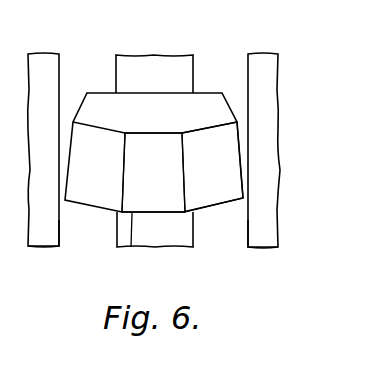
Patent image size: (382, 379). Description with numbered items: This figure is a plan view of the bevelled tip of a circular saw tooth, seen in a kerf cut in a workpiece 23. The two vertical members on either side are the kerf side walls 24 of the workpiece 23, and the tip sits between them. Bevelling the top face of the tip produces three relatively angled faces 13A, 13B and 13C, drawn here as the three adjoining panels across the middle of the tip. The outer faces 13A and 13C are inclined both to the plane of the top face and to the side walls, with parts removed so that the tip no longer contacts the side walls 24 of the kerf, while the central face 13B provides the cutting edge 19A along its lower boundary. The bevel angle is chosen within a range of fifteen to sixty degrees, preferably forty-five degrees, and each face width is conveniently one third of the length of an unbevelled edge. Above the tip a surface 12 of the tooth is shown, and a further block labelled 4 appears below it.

The lower block 4 is at (162, 237).
The surface 12 is at (161, 85).
The relatively angled face 13A is at (212, 167).
The central face 13B is at (154, 172).
The relatively angled face 13C is at (154, 152).
The cutting edge 19A is at (131, 247).
The workpiece 23 is at (53, 166).
The side walls 24 is at (60, 228).